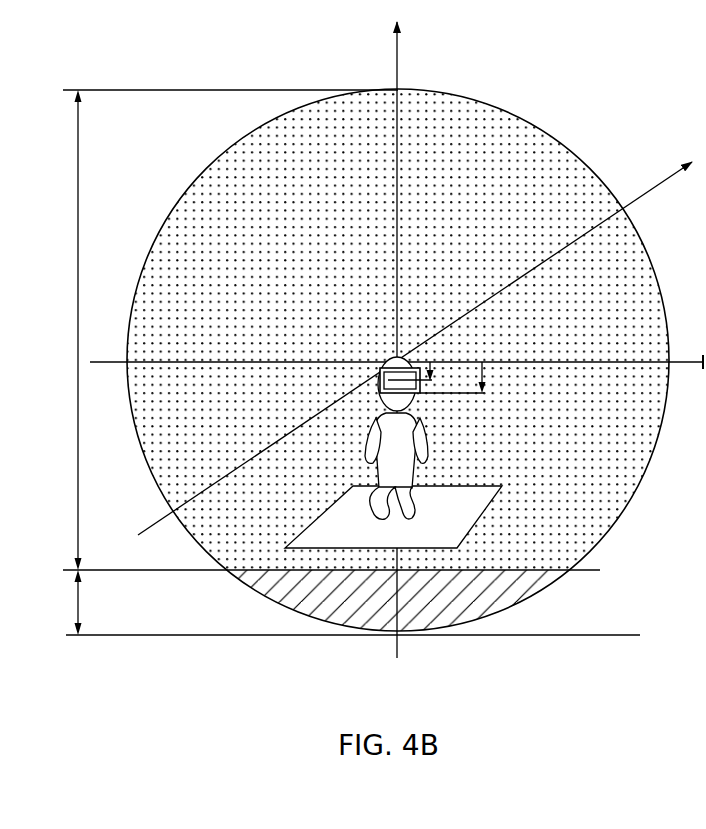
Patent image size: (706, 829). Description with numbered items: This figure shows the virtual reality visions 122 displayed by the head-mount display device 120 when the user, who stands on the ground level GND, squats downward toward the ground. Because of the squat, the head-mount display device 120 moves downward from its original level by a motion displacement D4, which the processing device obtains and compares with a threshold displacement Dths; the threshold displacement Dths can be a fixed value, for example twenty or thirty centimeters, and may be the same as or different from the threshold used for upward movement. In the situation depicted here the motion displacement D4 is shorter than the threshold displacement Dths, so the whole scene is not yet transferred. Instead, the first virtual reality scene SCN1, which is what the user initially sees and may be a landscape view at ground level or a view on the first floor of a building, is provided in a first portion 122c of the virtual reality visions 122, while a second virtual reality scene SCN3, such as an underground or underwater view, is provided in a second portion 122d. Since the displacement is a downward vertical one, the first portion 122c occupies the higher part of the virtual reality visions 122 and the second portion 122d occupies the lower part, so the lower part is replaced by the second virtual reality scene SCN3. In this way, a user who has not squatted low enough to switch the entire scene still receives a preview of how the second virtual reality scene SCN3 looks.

The virtual reality visions 122 is at (400, 354).
The first portion 122c is at (312, 330).
The second portion 122d is at (331, 602).
The head-mount display device 120 is at (380, 392).
The motion displacement D4 is at (429, 375).
The threshold displacement Dths is at (481, 377).
The first virtual reality scene SCN1 is at (283, 269).
The second virtual reality scene SCN3 is at (427, 612).
The ground level GND is at (488, 505).